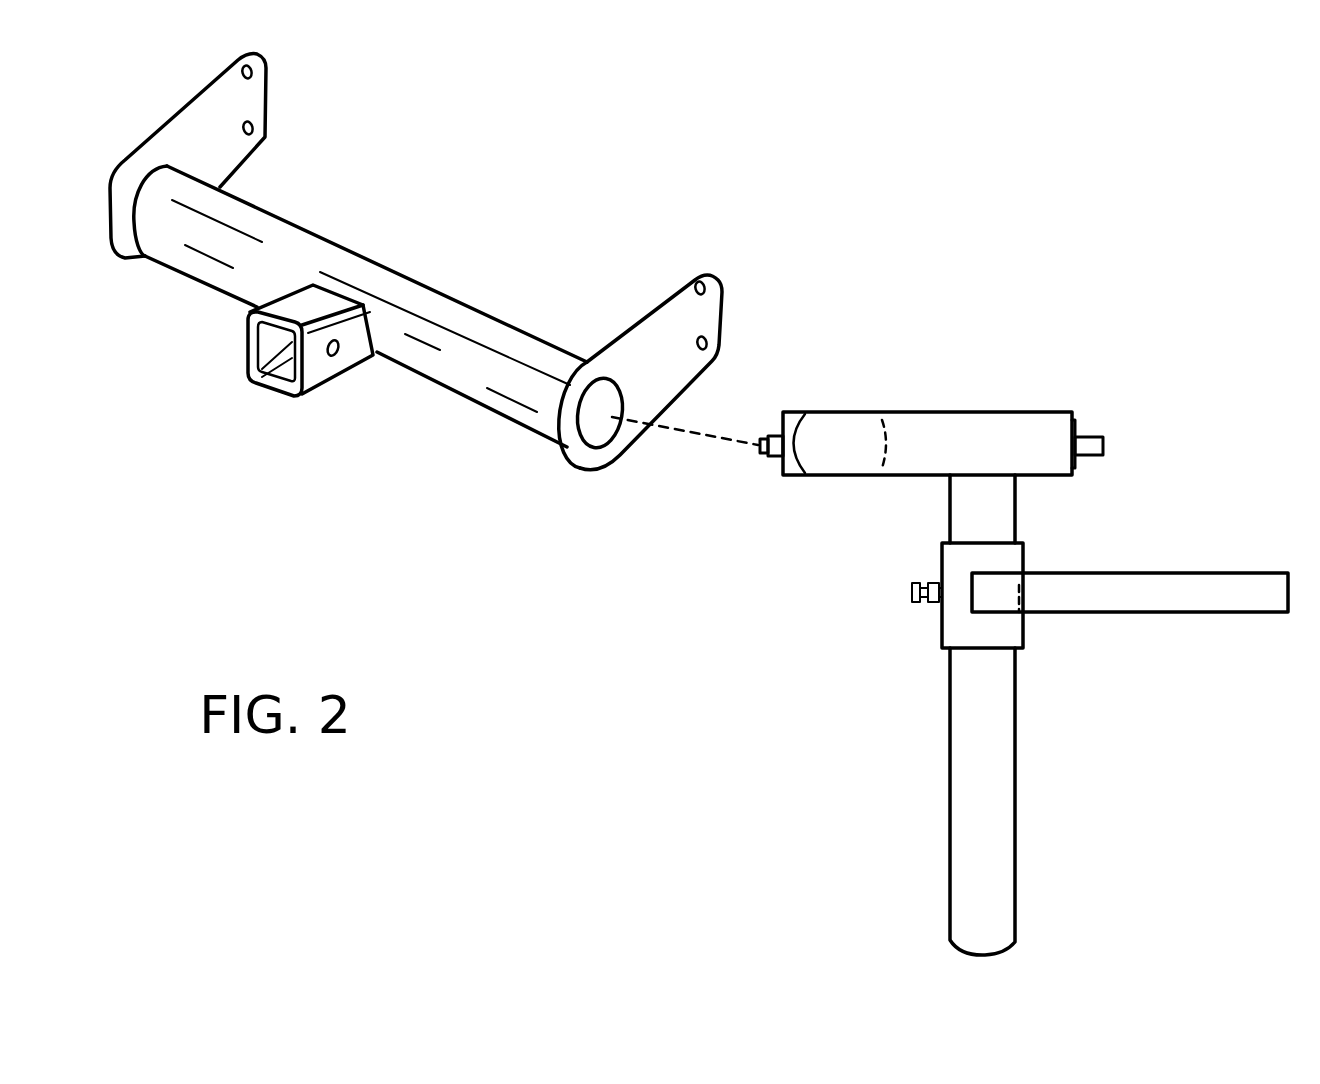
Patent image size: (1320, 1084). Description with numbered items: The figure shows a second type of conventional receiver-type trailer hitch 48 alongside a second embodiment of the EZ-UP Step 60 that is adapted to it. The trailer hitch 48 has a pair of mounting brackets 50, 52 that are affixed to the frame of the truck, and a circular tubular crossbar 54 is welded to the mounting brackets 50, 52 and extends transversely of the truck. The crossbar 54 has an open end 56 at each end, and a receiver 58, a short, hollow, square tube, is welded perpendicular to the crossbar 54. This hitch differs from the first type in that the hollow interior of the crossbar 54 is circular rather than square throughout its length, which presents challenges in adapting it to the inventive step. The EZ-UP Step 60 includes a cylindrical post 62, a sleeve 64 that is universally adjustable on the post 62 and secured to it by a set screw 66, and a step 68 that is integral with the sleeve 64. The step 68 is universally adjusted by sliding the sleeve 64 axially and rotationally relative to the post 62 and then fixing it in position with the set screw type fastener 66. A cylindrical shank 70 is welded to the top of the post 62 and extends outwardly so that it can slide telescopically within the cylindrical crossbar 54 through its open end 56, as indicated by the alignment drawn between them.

The receiver-type trailer hitch 48 is at (447, 222).
The mounting bracket 50 is at (217, 128).
The mounting bracket 52 is at (653, 327).
The circular tubular crossbar 54 is at (490, 365).
The open end 56 is at (598, 420).
The receiver 58 is at (250, 310).
The EZ-UP Step 60 is at (1017, 323).
The cylindrical post 62 is at (973, 787).
The sleeve 64 is at (950, 625).
The set screw 66 is at (905, 590).
The step 68 is at (1078, 597).
The cylindrical shank 70 is at (918, 396).